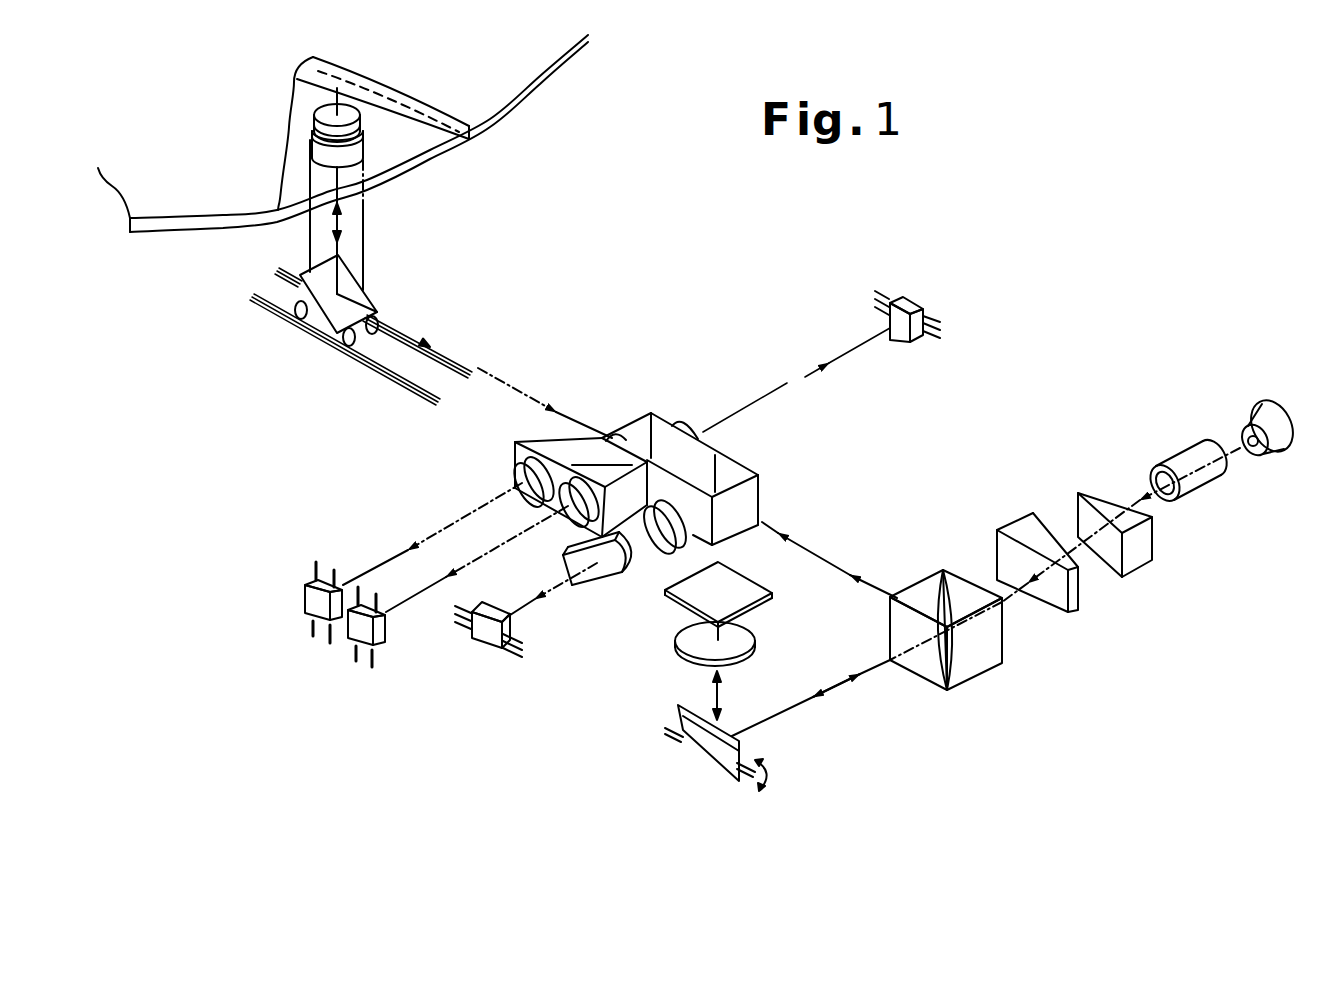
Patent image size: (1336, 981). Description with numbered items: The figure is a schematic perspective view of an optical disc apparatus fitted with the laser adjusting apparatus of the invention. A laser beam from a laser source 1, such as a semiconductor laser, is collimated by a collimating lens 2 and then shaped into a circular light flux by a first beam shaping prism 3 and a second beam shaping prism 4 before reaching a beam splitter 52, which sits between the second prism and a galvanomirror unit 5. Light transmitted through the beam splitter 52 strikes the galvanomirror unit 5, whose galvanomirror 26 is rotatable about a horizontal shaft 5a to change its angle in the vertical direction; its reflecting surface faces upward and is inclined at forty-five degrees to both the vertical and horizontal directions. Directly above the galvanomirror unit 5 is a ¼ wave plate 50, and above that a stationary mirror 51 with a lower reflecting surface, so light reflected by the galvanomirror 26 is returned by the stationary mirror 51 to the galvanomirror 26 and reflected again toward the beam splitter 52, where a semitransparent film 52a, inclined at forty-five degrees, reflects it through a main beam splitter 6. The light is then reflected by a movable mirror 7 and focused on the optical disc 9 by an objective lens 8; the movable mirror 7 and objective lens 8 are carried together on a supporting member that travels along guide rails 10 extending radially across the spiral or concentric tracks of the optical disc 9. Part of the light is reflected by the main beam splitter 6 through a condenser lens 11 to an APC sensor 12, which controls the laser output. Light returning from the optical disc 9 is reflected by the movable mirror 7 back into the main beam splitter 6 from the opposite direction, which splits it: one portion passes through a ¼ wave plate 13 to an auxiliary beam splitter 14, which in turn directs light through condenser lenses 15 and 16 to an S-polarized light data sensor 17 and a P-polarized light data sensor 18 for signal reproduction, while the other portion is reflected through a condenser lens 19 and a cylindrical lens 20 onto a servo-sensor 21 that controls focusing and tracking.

The laser source 1 is at (1262, 446).
The collimating lens 2 is at (1165, 462).
The first beam shaping prism 3 is at (1140, 550).
The second beam shaping prism 4 is at (1075, 600).
The galvanomirror unit 5 is at (712, 757).
The horizontal shaft 5a is at (770, 775).
The main beam splitter 6 is at (730, 478).
The movable mirror 7 is at (358, 297).
The objective lens 8 is at (348, 149).
The optical disc 9 is at (530, 70).
The guide rails 10 is at (381, 381).
The condenser lens 11 is at (691, 427).
The APC sensor 12 is at (905, 302).
The ¼ wave plate 13 is at (616, 433).
The auxiliary beam splitter 14 is at (602, 441).
The condenser lens 15 is at (527, 488).
The condenser lens 16 is at (571, 521).
The S-polarized light data sensor 17 is at (310, 598).
The P-polarized light data sensor 18 is at (361, 630).
The condenser lens 19 is at (672, 538).
The cylindrical lens 20 is at (603, 566).
The servo-sensor 21 is at (484, 628).
The galvanomirror 26 is at (743, 747).
The ¼ wave plate 50 is at (683, 636).
The stationary mirror 51 is at (732, 600).
The beam splitter 52 is at (980, 680).
The semitransparent film 52a is at (940, 660).